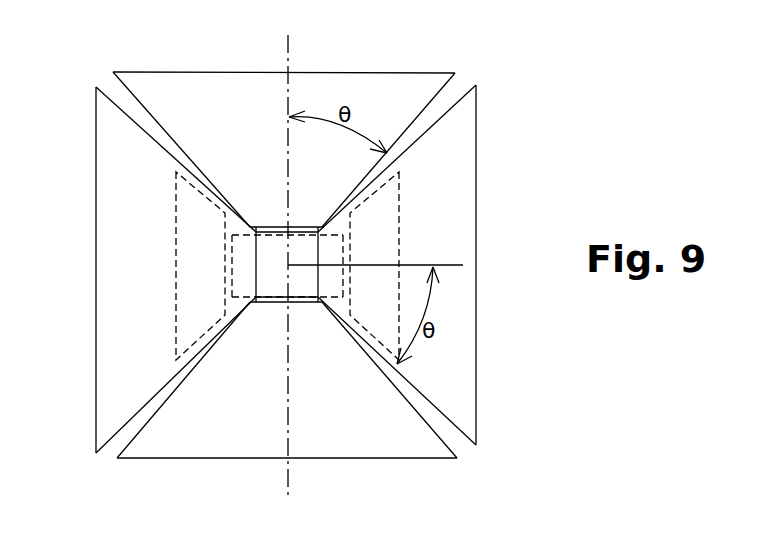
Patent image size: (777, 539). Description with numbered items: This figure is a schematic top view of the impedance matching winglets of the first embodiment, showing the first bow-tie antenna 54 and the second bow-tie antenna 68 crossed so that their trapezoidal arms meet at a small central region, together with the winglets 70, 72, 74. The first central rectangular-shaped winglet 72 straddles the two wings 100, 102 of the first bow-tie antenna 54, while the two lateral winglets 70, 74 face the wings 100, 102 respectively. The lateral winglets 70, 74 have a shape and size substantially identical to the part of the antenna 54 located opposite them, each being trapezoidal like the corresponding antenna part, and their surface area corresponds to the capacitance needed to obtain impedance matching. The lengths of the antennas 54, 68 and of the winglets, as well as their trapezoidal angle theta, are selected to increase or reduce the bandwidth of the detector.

The first bow-tie antenna 54 is at (95, 156).
The second bow-tie antenna 68 is at (212, 100).
The lateral winglet 70 is at (187, 259).
The first central rectangular-shaped winglet 72 is at (222, 243).
The lateral winglet 74 is at (385, 218).
The wing of bow-tie antenna 100 is at (127, 313).
The wing of bow-tie antenna 102 is at (455, 348).